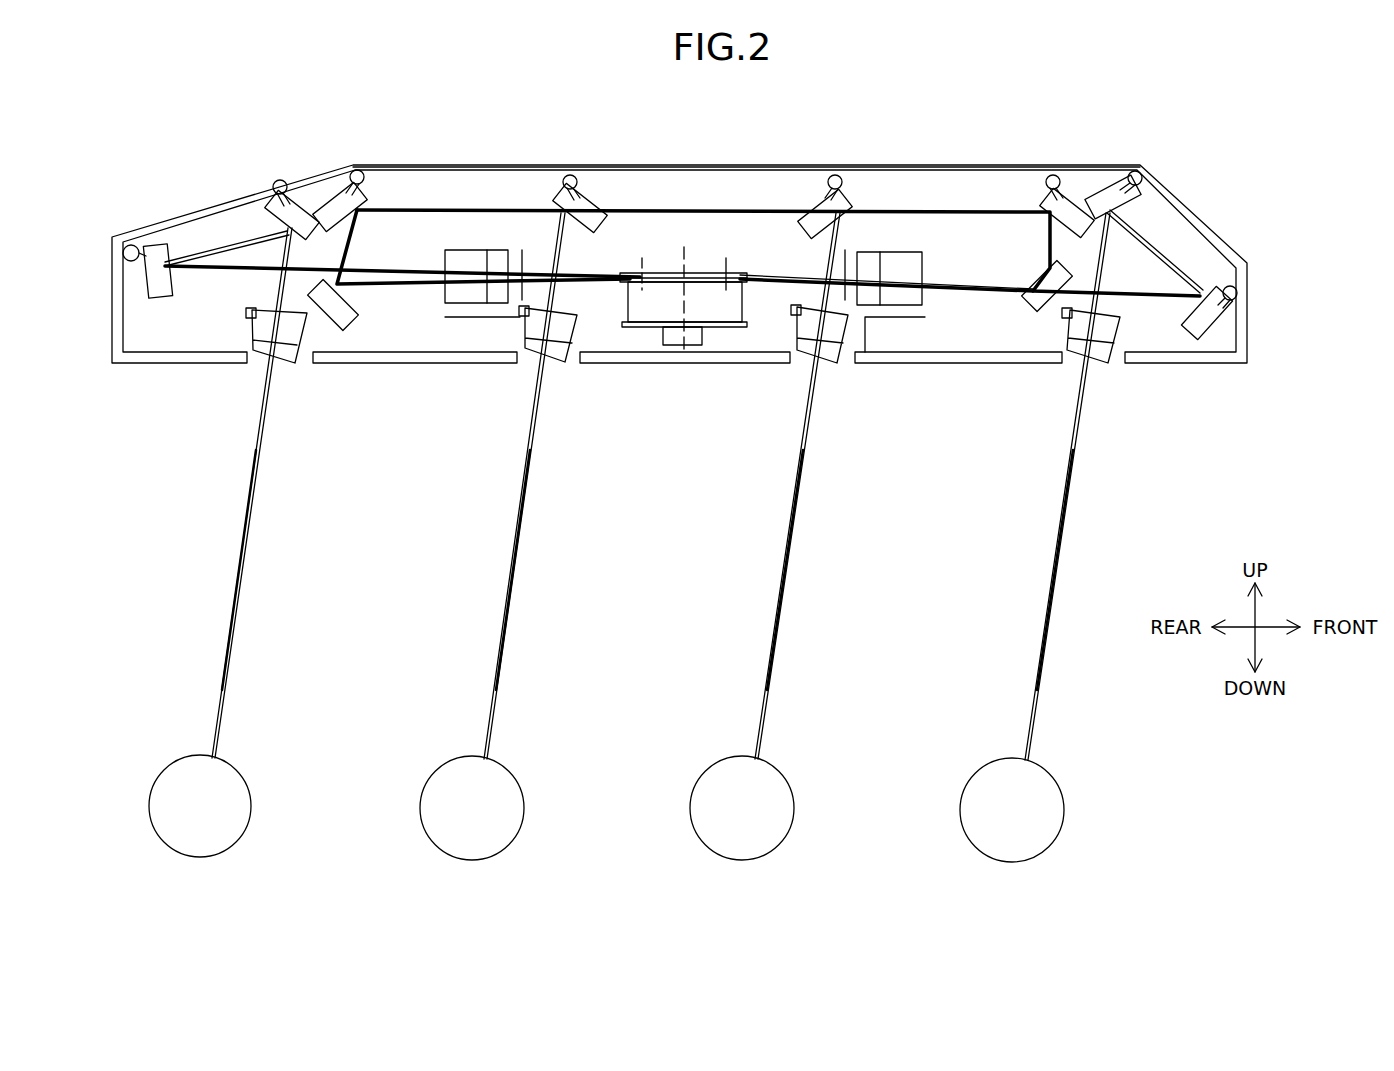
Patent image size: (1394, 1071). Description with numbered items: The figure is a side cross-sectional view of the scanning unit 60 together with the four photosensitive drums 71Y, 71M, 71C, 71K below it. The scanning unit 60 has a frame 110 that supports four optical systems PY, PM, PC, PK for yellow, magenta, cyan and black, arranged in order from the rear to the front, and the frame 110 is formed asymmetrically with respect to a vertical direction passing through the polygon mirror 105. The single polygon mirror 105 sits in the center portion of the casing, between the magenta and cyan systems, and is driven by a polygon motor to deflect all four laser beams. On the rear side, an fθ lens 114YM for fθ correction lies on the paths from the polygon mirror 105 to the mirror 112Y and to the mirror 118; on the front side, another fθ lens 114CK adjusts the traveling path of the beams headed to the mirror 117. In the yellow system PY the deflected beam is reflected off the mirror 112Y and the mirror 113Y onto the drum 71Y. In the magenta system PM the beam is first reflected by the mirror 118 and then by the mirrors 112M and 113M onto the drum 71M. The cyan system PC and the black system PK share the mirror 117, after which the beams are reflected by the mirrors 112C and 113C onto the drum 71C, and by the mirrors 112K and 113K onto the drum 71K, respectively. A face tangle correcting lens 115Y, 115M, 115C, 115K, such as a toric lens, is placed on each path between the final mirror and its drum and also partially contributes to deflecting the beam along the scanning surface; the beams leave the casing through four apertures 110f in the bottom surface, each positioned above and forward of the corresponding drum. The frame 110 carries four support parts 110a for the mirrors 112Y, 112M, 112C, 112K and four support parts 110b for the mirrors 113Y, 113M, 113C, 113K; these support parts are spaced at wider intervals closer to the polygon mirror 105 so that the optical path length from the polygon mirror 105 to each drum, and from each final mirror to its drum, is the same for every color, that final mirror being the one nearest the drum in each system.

The scanning unit 60 is at (657, 161).
The polygon mirror 105 is at (698, 257).
The frame 110 is at (1093, 168).
The support part 110a is at (164, 236).
The support part 110b is at (313, 220).
The aperture 110f is at (257, 364).
The mirror 112Y is at (141, 246).
The mirror 112M is at (305, 195).
The mirror 112C is at (1047, 200).
The mirror 112K is at (1195, 340).
The mirror 113Y is at (273, 190).
The mirror 113M is at (580, 198).
The mirror 113C is at (811, 197).
The mirror 113K is at (1114, 198).
The fθ lens 114YM is at (468, 258).
The fθ lens 114CK is at (900, 258).
The face tangle correcting lens 115Y is at (280, 356).
The face tangle correcting lens 115M is at (550, 358).
The face tangle correcting lens 115C is at (825, 358).
The face tangle correcting lens 115K is at (1095, 358).
The mirror 117 is at (1040, 306).
The mirror 118 is at (346, 312).
The optical system PY is at (248, 560).
The optical system PM is at (520, 566).
The optical system PC is at (792, 566).
The optical system PK is at (1062, 563).
The photosensitive drum 71Y is at (232, 792).
The photosensitive drum 71M is at (503, 792).
The photosensitive drum 71C is at (773, 792).
The photosensitive drum 71K is at (1046, 792).